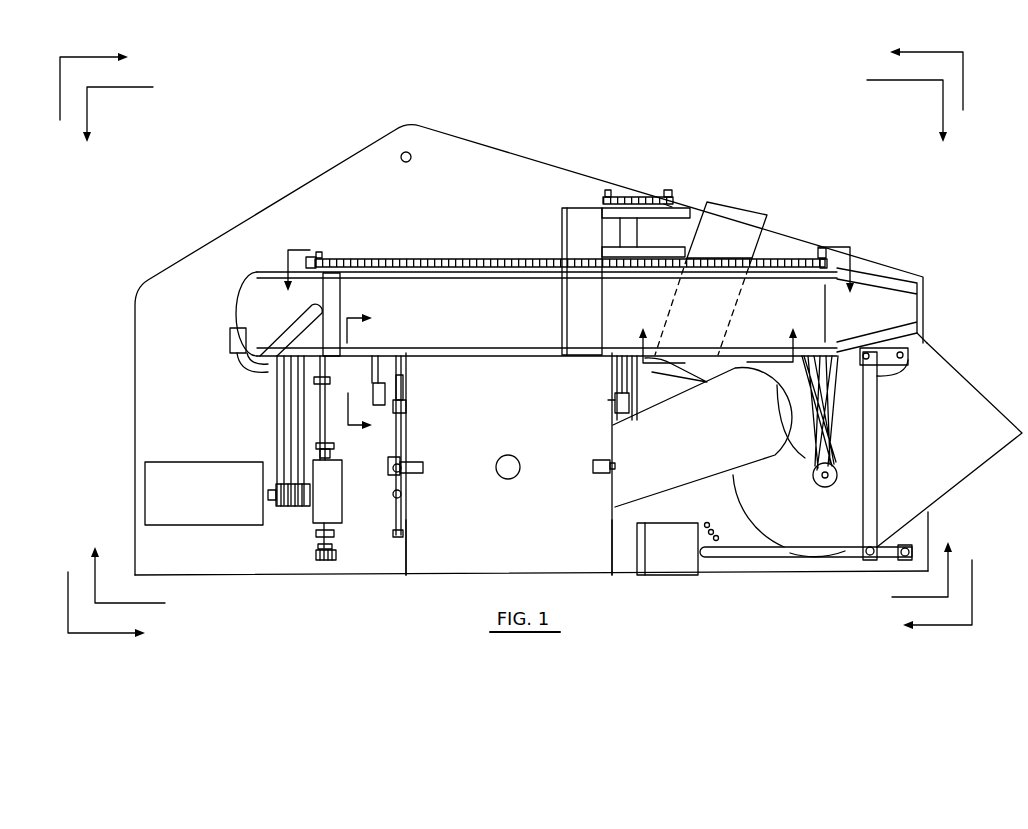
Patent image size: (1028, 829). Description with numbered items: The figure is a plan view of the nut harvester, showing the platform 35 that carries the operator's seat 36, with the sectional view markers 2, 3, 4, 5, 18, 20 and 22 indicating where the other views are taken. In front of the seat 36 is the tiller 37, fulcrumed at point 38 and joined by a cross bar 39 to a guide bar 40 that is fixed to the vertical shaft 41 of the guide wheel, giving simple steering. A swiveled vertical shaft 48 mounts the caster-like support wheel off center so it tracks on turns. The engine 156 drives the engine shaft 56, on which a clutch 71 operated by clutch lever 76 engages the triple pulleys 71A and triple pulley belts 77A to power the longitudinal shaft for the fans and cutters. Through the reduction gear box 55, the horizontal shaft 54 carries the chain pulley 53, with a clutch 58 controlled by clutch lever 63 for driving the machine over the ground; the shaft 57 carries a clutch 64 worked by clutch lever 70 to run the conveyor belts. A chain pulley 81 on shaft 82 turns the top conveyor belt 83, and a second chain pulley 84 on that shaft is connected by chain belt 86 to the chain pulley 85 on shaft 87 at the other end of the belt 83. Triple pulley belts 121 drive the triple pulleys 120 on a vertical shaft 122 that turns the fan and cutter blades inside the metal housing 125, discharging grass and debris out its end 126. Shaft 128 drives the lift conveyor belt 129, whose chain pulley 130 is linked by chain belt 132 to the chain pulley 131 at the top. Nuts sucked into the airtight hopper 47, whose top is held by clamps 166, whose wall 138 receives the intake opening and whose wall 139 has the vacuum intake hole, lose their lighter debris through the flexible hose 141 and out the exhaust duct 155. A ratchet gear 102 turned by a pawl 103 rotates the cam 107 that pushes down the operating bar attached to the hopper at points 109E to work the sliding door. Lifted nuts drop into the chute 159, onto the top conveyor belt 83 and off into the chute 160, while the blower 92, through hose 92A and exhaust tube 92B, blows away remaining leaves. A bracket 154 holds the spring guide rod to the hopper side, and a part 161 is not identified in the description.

The section line 2- 2 is at (521, 561).
The section line 3- 3 is at (514, 122).
The section line 4- 4 is at (109, 344).
The section line 5- 5 is at (923, 338).
The section line 18- 18 is at (568, 282).
The section line 20- 20 is at (718, 335).
The section line 22- 22 is at (371, 374).
The platform 35 is at (257, 208).
The operator's seat 36 is at (665, 562).
The tiller 37 is at (717, 556).
The fulcrum point 38 is at (905, 556).
The cross bar 39 is at (870, 465).
The guide bar 40 is at (880, 357).
The vertical shaft 41 is at (928, 346).
The hopper 47 is at (543, 575).
The swiveled vertical shaft 48 is at (411, 155).
The chain pulley 53 is at (334, 556).
The horizontal shaft 54 is at (334, 543).
The reduction gear box 55 is at (333, 478).
The engine shaft 56 is at (277, 507).
The shaft 57 is at (321, 413).
The clutch 58 is at (335, 533).
The clutch lever 63 is at (714, 531).
The clutch 64 is at (337, 450).
The clutch lever 70 is at (713, 538).
The clutch 71 is at (293, 546).
The triple pulleys 71A is at (273, 503).
The clutch lever 76 is at (708, 522).
The triple pulley belts 77A is at (295, 433).
The chain pulley 81 is at (327, 378).
The shaft 82 is at (322, 258).
The top conveyor belt 83 is at (447, 288).
The second chain pulley 84 is at (330, 262).
The chain pulley 85 is at (827, 261).
The chain belt 86 is at (415, 258).
The shaft 87 is at (825, 248).
The blower 92 is at (230, 338).
The hose 92A is at (242, 368).
The exhaust tube 92B is at (326, 293).
The ratchet gear 102 is at (380, 402).
The pawl 103 is at (403, 395).
The cam 107 is at (407, 407).
The attachment points 109E is at (404, 532).
The triple pulleys 120 is at (813, 477).
The triple pulley belts 121 is at (832, 405).
The vertical shaft 122 is at (823, 482).
The metal housing 125 is at (830, 563).
The end of housing 126 is at (973, 384).
The shaft 128 is at (669, 196).
The lift conveyor belt 129 is at (610, 233).
The chain pulley 130 is at (673, 205).
The chain pulley 131 is at (603, 197).
The chain belt 132 is at (624, 197).
The wall 138 is at (402, 577).
The wall 139 is at (615, 530).
The flexible hose 141 is at (690, 410).
The bracket 154 is at (402, 475).
The exhaust duct 155 is at (749, 207).
The engine 156 is at (167, 512).
The chute 159 is at (578, 253).
The chute 160 is at (243, 300).
The nose section 161 is at (905, 322).
The clamps 166 is at (595, 460).